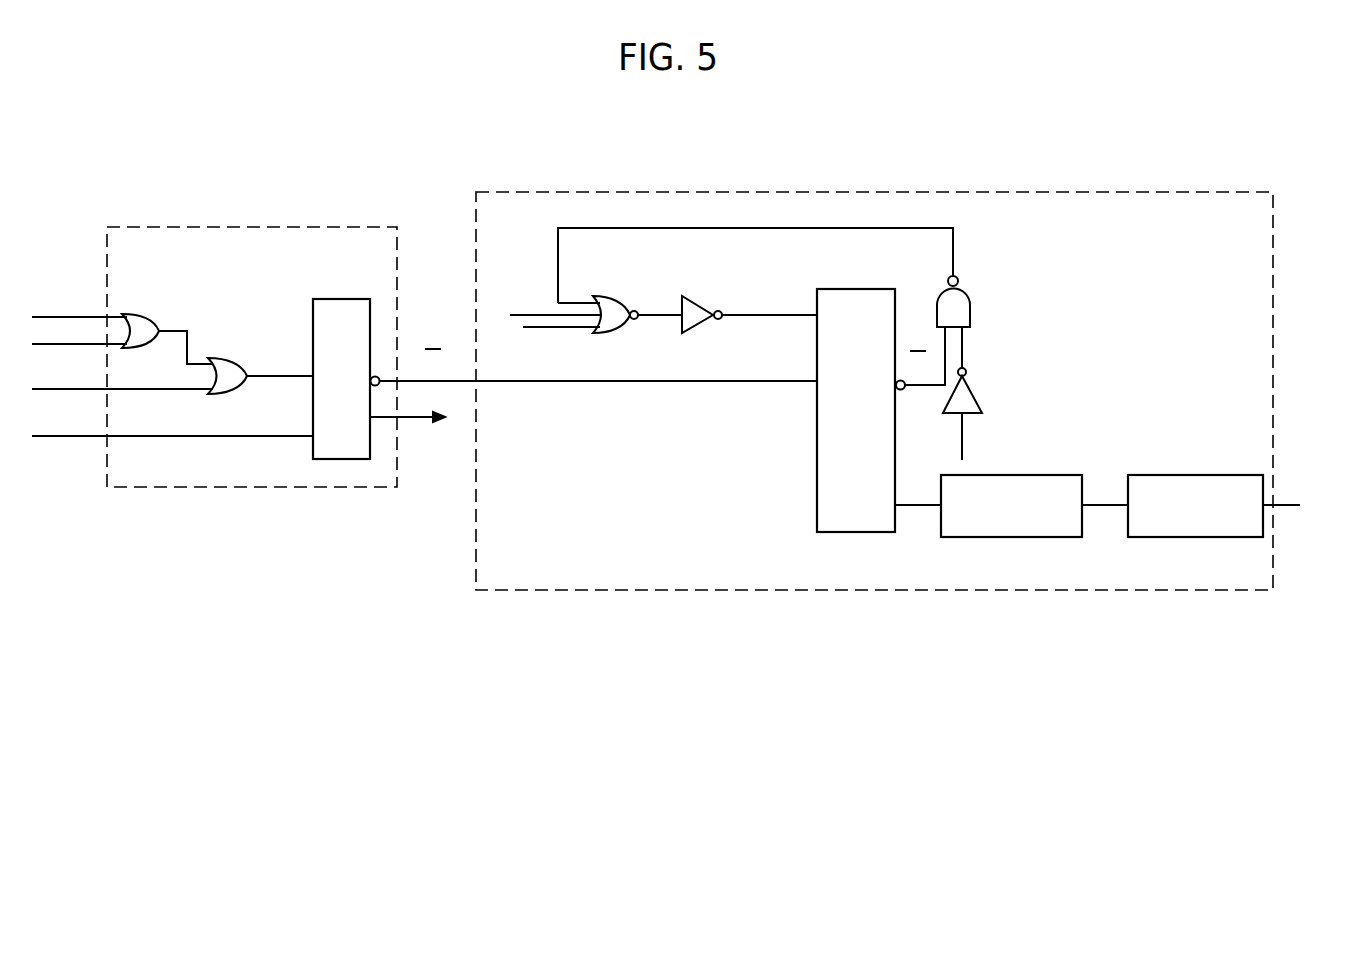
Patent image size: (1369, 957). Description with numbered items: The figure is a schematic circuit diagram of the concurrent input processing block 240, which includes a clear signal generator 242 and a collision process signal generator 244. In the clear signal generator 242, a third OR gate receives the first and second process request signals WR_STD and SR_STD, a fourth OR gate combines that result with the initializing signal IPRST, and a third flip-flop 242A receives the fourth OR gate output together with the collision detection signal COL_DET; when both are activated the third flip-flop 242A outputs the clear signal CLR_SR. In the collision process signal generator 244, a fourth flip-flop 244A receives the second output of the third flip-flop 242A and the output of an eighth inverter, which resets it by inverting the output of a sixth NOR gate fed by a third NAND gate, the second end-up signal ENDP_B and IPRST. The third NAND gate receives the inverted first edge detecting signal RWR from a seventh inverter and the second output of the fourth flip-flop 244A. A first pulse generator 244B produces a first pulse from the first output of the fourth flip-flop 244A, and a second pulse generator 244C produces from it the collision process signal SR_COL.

The concurrent input processing block 240 is at (1090, 120).
The clear signal generator 242 is at (335, 227).
The third flip-flop 242A is at (322, 299).
The collision process signal generator 244 is at (1210, 193).
The fourth flip-flop 244A is at (862, 289).
The first pulse generator 244B is at (1032, 475).
The second pulse generator 244C is at (1197, 475).